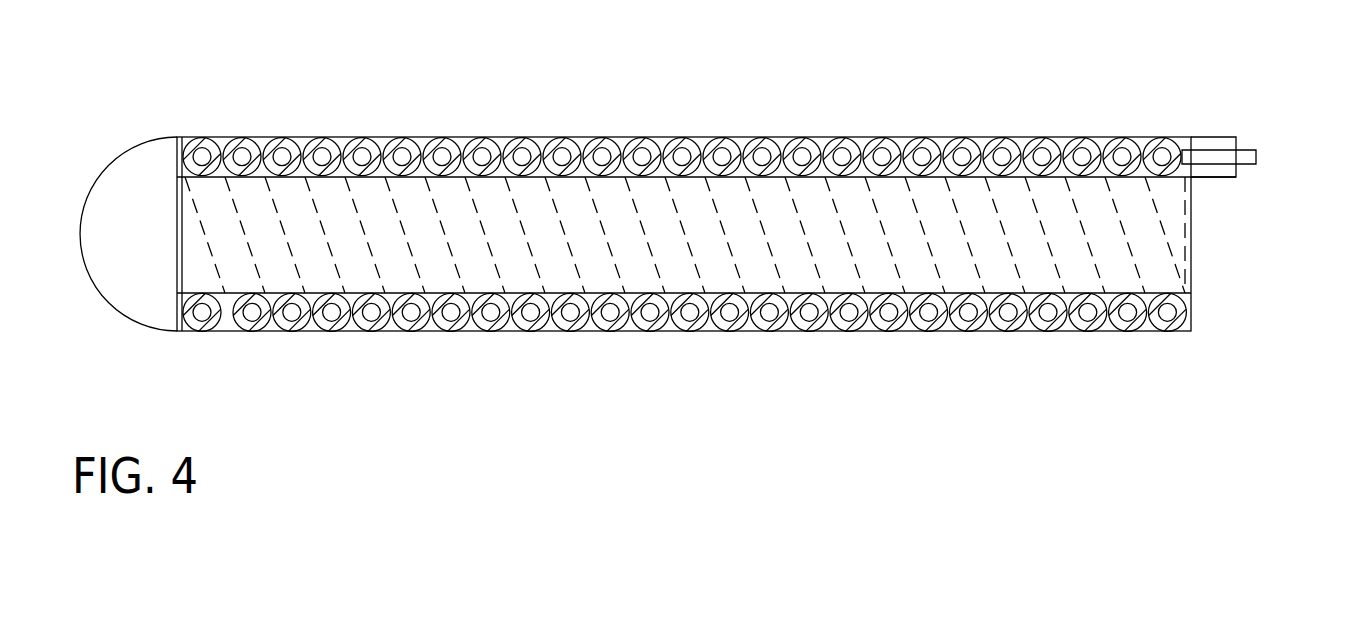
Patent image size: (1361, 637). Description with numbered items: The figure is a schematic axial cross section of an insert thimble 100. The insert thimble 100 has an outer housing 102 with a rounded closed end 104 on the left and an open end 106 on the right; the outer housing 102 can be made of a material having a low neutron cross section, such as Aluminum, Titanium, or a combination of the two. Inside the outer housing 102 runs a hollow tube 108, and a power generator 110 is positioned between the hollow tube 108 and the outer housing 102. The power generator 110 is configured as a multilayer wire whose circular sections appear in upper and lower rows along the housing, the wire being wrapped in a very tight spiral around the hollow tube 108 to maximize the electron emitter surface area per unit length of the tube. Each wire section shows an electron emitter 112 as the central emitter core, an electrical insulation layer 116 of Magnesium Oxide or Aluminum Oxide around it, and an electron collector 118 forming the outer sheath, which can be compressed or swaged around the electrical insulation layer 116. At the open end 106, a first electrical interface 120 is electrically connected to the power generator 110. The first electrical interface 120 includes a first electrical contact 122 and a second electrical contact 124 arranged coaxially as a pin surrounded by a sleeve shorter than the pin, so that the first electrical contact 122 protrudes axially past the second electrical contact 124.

The insert thimble 100 is at (197, 113).
The outer housing 102 is at (537, 138).
The closed end 104 is at (120, 315).
The open end 106 is at (1197, 234).
The hollow tube 108 is at (1152, 288).
The power generator 110 is at (1020, 325).
The electron emitter 112 is at (532, 312).
The electrical insulation layer 116 is at (570, 323).
The electron collector 118 is at (630, 330).
The first electrical interface 120 is at (1217, 138).
The first electrical contact 122 is at (1256, 157).
The second electrical contact 124 is at (1215, 177).